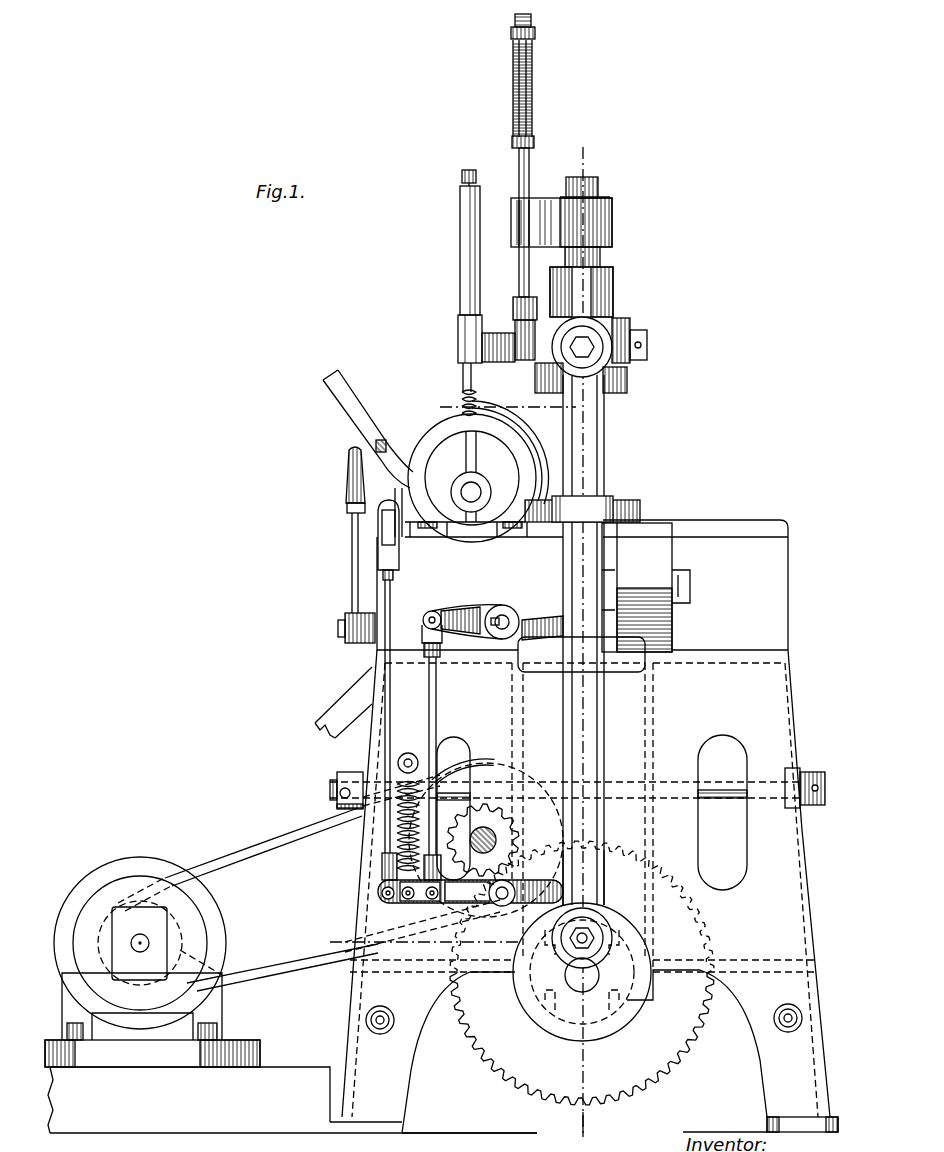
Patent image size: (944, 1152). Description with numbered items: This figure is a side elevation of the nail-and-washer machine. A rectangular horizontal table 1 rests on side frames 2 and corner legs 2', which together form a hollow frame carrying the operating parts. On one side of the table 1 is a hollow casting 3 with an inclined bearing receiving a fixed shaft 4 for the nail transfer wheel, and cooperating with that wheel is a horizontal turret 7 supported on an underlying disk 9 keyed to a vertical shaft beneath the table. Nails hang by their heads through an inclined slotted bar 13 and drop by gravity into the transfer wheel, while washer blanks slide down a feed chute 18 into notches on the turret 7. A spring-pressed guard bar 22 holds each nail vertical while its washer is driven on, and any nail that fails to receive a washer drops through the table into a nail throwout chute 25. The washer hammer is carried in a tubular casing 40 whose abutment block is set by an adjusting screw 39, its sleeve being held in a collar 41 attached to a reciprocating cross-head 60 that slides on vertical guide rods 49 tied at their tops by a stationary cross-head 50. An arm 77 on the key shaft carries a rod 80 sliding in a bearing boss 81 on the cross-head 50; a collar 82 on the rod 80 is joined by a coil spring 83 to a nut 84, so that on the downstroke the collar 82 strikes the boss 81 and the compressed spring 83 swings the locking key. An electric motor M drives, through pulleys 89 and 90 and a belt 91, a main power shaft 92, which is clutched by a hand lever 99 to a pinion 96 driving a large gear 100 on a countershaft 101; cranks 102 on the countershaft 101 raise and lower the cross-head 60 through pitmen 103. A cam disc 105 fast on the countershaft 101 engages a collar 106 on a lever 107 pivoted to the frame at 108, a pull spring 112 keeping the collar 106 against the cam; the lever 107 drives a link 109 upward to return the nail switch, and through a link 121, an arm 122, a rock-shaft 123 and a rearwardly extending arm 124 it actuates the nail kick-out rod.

The table 1 is at (533, 597).
The side frames 2 is at (444, 826).
The corner legs 2' is at (585, 1099).
The hollow casting 3 is at (508, 483).
The fixed shaft 4 is at (472, 491).
The turret 7 is at (453, 357).
The disk 9 is at (578, 471).
The slotted bar 13 is at (462, 393).
The feed chute 18 is at (350, 425).
The guard bar 22 is at (582, 177).
The nail throwout chute 25 is at (352, 690).
The adjusting screw 39 is at (461, 176).
The tubular casing 40 is at (462, 252).
The collar 41 is at (459, 346).
The guide rods 49 is at (598, 256).
The stationary cross-head 50 is at (612, 212).
The reciprocating cross-head 60 is at (627, 386).
The arm 77 is at (523, 357).
The rod 80 is at (519, 173).
The bearing boss 81 is at (513, 218).
The collar 82 is at (513, 141).
The coil spring 83 is at (534, 60).
The nut 84 is at (534, 33).
The pulley 89 is at (180, 951).
The pulley 90 is at (448, 905).
The belt 91 is at (306, 822).
The main power shaft 92 is at (497, 822).
The pinion 96 is at (482, 765).
The hand lever 99 is at (348, 486).
The large gear 100 is at (470, 1030).
The countershaft 101 is at (580, 978).
The cranks 102 is at (606, 939).
The pitmen 103 is at (600, 745).
The cam disc 105 is at (612, 1035).
The collar 106 is at (600, 850).
The lever 107 is at (500, 908).
The pivot 108 is at (490, 905).
The link 109 is at (405, 752).
The pull spring 112 is at (397, 827).
The link 121 is at (438, 688).
The arm 122 is at (461, 608).
The rock-shaft 123 is at (506, 616).
The arm 124 is at (536, 637).
The electric motor M is at (162, 858).